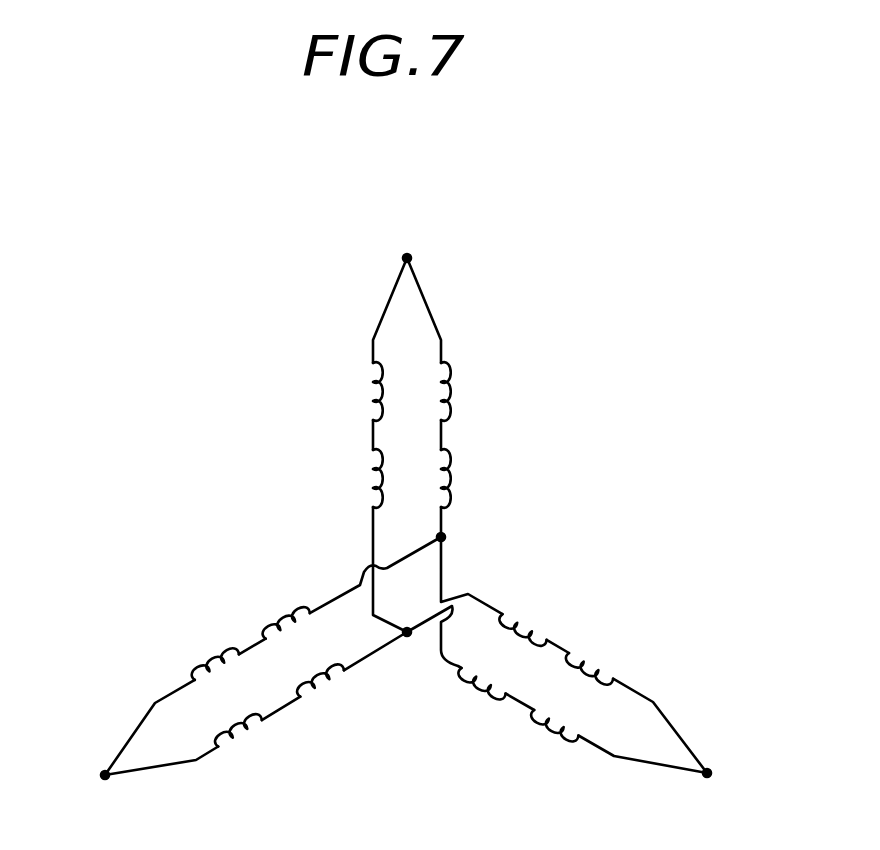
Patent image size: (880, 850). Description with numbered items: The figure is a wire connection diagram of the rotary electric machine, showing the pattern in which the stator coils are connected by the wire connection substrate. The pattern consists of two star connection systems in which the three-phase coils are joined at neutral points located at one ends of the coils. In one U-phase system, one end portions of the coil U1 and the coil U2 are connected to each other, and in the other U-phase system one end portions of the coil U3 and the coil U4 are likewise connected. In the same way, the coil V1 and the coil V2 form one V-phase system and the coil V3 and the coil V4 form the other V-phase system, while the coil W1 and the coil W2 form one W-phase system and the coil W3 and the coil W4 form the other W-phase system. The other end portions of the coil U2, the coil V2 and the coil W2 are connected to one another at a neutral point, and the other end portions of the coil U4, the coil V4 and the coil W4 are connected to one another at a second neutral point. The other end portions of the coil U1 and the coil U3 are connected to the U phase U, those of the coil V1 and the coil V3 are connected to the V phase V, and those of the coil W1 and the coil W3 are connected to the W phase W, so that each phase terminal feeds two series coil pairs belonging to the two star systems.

The U phase U is at (405, 229).
The V phase V is at (82, 784).
The W phase W is at (730, 782).
The coil U1 is at (339, 391).
The coil U2 is at (339, 478).
The coil U3 is at (475, 391).
The coil U4 is at (476, 478).
The coil V1 is at (254, 755).
The coil V2 is at (336, 705).
The coil V3 is at (206, 641).
The coil V4 is at (281, 598).
The coil W1 is at (608, 644).
The coil W2 is at (530, 602).
The coil W3 is at (550, 748).
The coil W4 is at (470, 705).